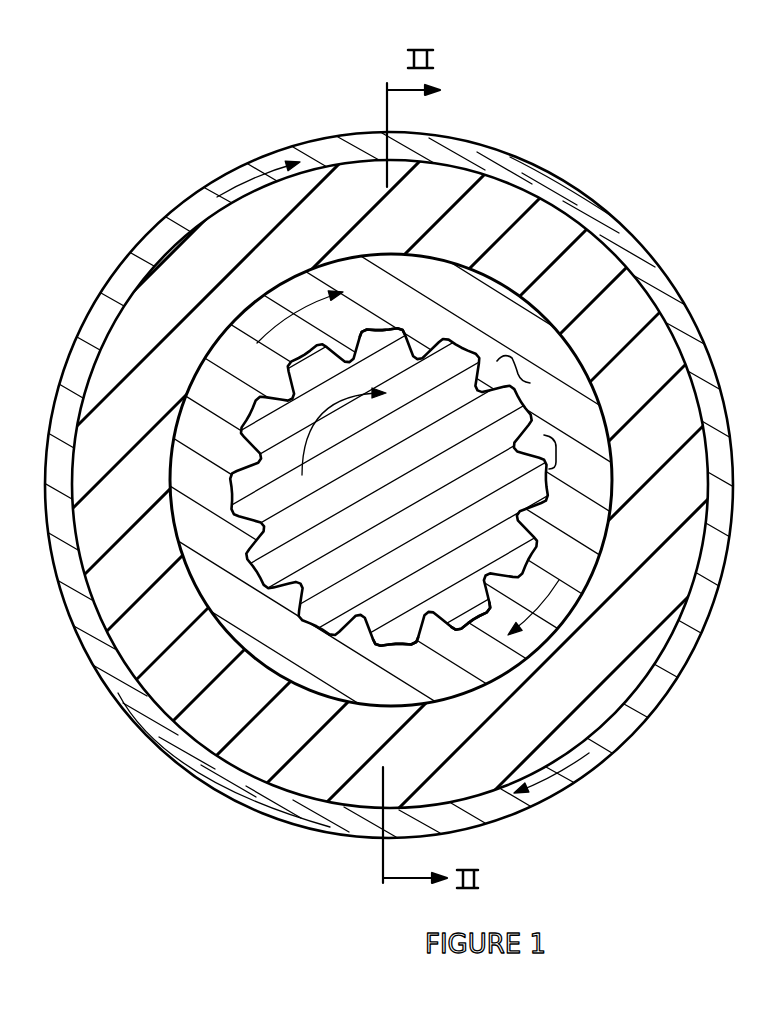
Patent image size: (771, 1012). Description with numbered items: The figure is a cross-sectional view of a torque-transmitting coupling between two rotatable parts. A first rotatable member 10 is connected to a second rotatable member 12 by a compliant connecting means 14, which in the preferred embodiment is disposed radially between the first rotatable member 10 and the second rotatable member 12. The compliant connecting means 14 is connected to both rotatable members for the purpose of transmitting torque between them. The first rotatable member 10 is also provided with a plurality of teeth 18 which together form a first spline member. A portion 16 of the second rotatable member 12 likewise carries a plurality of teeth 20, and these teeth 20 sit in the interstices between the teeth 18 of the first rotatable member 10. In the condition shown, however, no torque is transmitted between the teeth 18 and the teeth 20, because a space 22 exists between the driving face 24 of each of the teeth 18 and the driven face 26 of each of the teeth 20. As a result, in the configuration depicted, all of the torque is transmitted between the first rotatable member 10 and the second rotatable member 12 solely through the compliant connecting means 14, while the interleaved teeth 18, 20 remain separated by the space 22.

The first rotatable member 10 is at (247, 527).
The second rotatable member 12 is at (95, 645).
The compliant connecting means 14 is at (450, 183).
The portion of the second rotatable member 16 is at (397, 551).
The teeth 18 is at (360, 623).
The teeth 20 is at (385, 337).
The space 22 is at (517, 363).
The driving face 24 is at (440, 332).
The driven face 26 is at (297, 367).